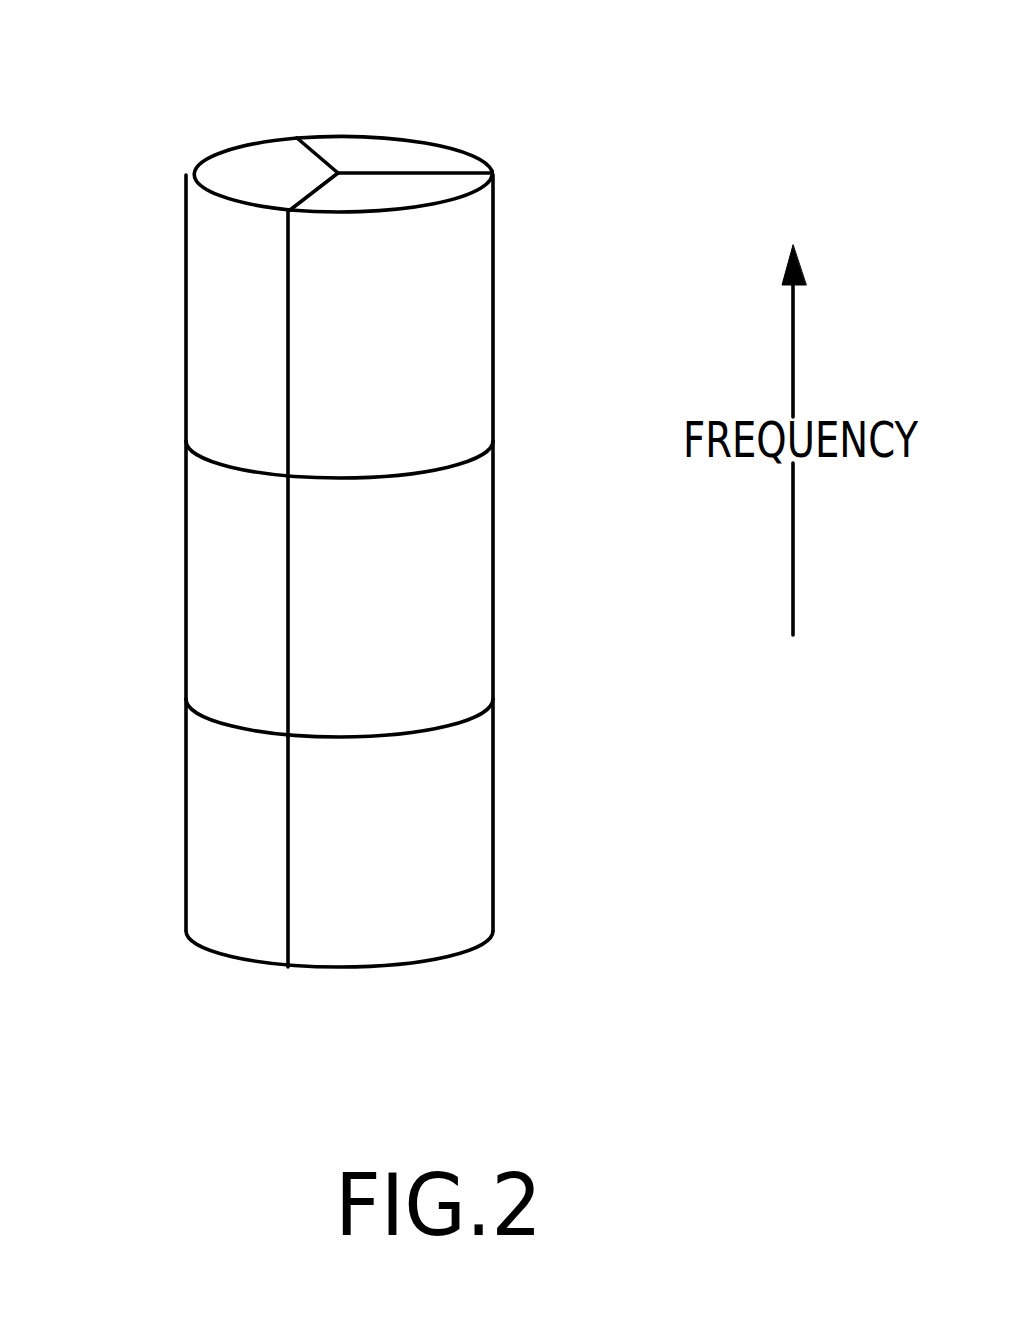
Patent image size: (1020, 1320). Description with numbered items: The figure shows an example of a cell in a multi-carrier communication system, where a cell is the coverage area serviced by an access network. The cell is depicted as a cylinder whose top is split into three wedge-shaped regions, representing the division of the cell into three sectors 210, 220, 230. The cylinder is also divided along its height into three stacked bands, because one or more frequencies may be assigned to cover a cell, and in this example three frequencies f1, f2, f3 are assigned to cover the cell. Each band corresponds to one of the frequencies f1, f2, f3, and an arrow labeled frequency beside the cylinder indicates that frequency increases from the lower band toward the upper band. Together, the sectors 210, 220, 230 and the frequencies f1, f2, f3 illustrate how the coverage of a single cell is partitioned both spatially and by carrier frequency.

The sector 210 is at (257, 170).
The sector 220 is at (417, 152).
The sector 230 is at (453, 192).
The frequency f1 is at (187, 300).
The frequency f2 is at (186, 550).
The frequency f3 is at (186, 808).